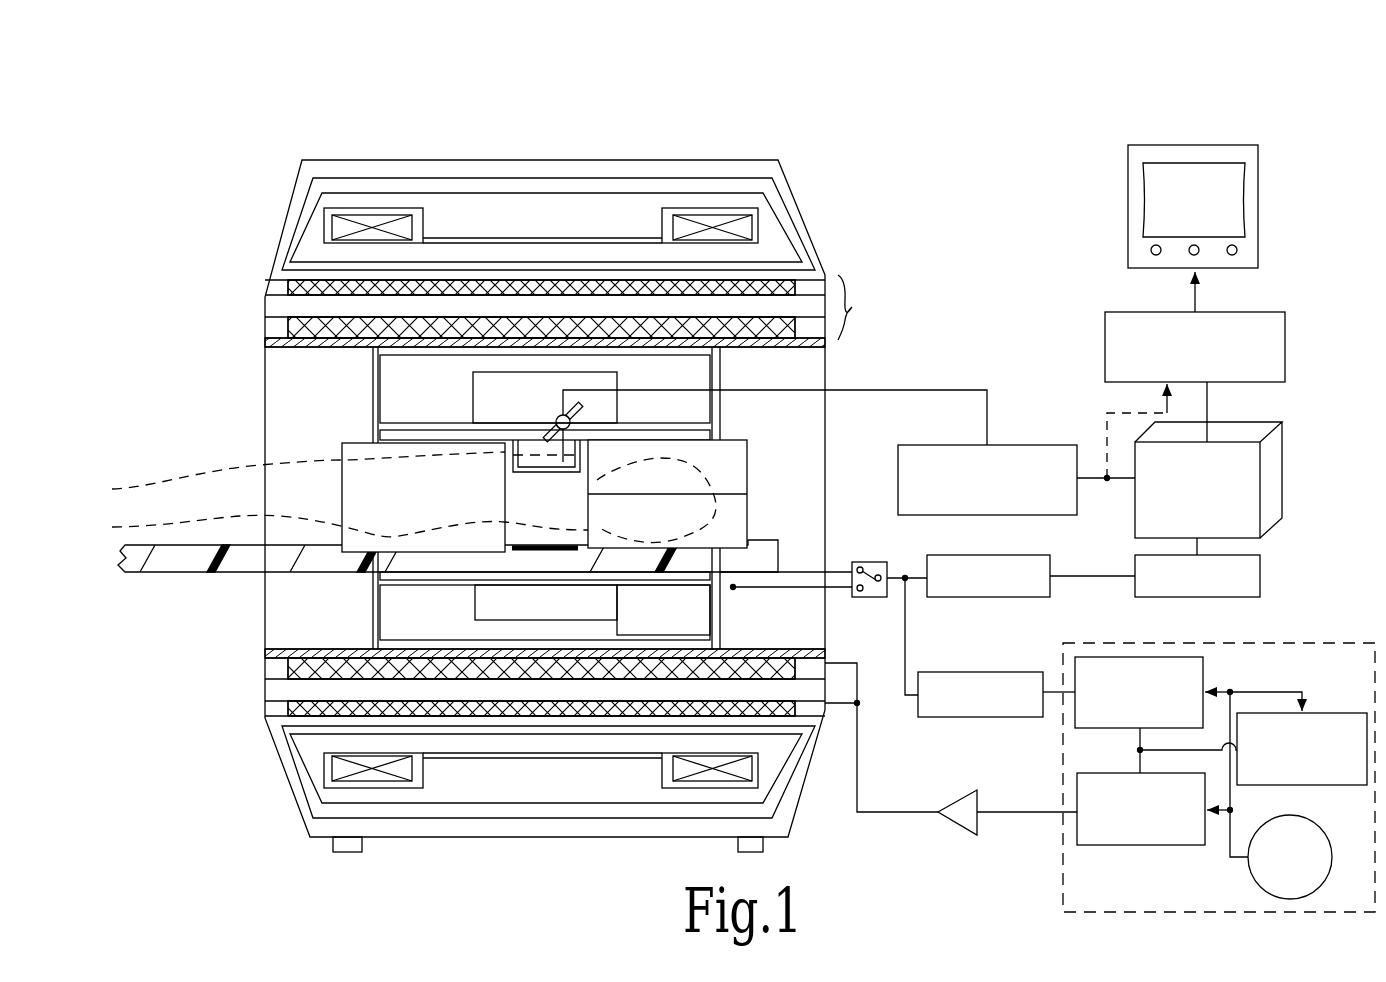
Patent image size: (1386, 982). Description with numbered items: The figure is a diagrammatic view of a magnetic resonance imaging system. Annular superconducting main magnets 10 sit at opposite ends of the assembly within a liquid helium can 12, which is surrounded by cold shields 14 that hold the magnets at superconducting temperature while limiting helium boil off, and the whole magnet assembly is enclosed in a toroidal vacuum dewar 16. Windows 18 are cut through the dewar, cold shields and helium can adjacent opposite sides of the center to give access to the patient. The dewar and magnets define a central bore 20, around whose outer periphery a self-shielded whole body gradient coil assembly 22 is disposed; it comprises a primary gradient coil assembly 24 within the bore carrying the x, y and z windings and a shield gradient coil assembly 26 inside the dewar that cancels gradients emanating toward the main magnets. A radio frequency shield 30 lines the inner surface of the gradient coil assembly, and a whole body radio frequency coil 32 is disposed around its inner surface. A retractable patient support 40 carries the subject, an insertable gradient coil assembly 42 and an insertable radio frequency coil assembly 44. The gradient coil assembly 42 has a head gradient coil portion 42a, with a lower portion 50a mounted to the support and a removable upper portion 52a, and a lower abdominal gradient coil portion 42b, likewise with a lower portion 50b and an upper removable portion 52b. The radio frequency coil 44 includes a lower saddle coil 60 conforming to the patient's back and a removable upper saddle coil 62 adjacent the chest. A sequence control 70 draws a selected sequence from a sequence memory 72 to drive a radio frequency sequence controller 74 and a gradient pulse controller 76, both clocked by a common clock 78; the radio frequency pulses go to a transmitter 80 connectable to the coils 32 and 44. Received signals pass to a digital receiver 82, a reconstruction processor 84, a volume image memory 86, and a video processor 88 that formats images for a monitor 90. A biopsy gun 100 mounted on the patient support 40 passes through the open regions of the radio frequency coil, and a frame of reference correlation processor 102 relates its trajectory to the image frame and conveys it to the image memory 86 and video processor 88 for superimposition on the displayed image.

The main magnets 10 is at (343, 227).
The liquid helium can 12 is at (340, 207).
The cold shields 14 is at (407, 177).
The toroidal vacuum dewar 16 is at (522, 158).
The windows 18 is at (473, 385).
The central bore 20 is at (795, 476).
The whole body gradient coil assembly 22 is at (859, 307).
The primary gradient coil assembly 24 is at (285, 327).
The shield gradient coil assembly 26 is at (287, 289).
The radio frequency shield 30 is at (333, 345).
The whole body radio frequency coil 32 is at (375, 605).
The retractable patient support 40 is at (242, 572).
The insertable gradient coil assembly 42 is at (605, 560).
The first gradient coil portion 42a is at (683, 562).
The second gradient coil portion 42b is at (423, 570).
The insertable radio frequency coil assembly 44 is at (518, 442).
The lower portion 50a is at (735, 520).
The lower portion 50b is at (365, 560).
The upper removable portion 52a is at (735, 458).
The upper removable portion 52b is at (342, 455).
The lower saddle coil 60 is at (505, 530).
The upper saddle coil 62 is at (508, 457).
The sequence control 70 is at (1300, 635).
The sequence memory 72 is at (1355, 713).
The radio frequency sequence controller 74 is at (1203, 665).
The gradient pulse controller 76 is at (1138, 845).
The common clock 78 is at (1328, 840).
The radio frequency transmitter 80 is at (980, 672).
The digital receiver 82 is at (987, 555).
The reconstruction processor 84 is at (1262, 575).
The volume image memory 86 is at (1270, 450).
The video processor 88 is at (1285, 343).
The monitor 90 is at (1258, 205).
The biopsy gun 100 is at (560, 400).
The frame of reference correlation processor 102 is at (948, 445).